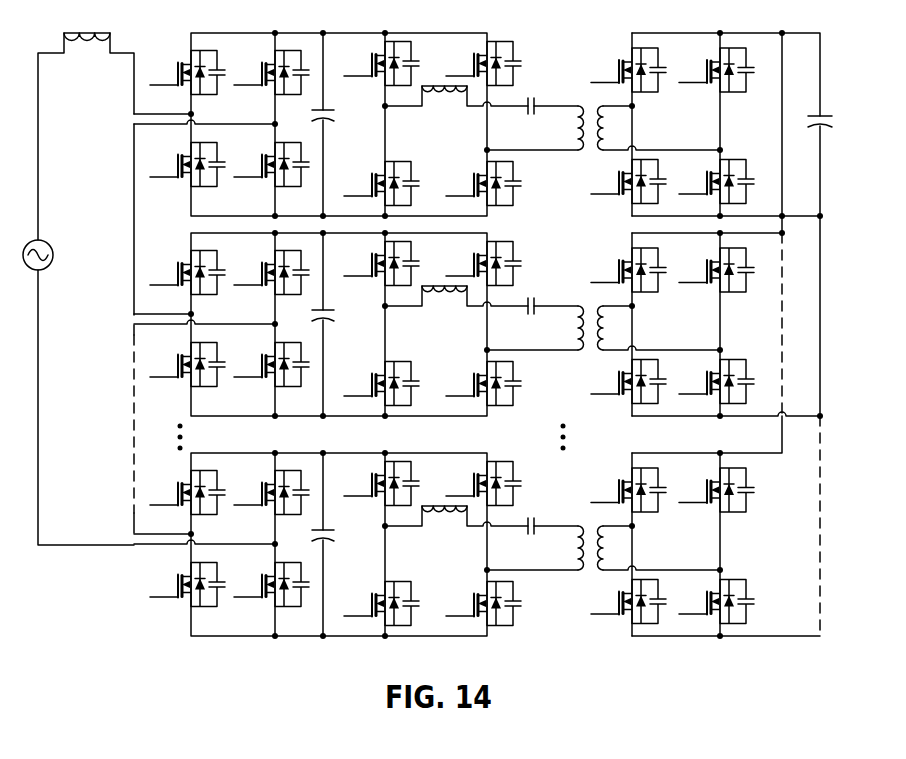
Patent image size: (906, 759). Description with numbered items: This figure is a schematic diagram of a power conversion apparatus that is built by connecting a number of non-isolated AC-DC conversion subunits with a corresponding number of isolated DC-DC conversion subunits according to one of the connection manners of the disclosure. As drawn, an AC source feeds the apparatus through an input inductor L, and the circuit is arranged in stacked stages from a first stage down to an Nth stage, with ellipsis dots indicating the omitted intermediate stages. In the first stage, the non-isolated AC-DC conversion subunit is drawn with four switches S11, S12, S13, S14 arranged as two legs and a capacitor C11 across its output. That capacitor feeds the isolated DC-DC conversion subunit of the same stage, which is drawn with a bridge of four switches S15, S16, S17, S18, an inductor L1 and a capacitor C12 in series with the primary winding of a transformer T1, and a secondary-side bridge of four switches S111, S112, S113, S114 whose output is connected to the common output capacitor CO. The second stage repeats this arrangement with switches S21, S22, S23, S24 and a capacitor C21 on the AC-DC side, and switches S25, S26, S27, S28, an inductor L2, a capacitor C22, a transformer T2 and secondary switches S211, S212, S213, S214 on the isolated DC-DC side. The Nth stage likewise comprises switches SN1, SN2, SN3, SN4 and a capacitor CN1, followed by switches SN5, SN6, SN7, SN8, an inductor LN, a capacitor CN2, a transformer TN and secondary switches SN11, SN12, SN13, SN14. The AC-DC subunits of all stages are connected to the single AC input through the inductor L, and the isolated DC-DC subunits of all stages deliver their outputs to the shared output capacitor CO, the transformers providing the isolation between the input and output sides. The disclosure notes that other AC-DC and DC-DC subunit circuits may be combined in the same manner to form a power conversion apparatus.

The input inductor L is at (87, 25).
The switch S11 is at (187, 73).
The switch S12 is at (187, 165).
The switch S13 is at (271, 73).
The switch S14 is at (271, 165).
The DC link capacitor C11 is at (340, 121).
The switch S15 is at (381, 64).
The switch S16 is at (381, 184).
The switch S17 is at (483, 64).
The switch S18 is at (483, 184).
The resonant inductor L1 is at (444, 109).
The resonant capacitor C12 is at (546, 96).
The transformer T1 is at (581, 128).
The switch S111 is at (626, 70).
The switch S112 is at (626, 182).
The switch S113 is at (714, 70).
The switch S114 is at (714, 182).
The output capacitor CO is at (836, 123).
The switch S21 is at (187, 273).
The switch S22 is at (187, 365).
The switch S23 is at (271, 273).
The switch S24 is at (271, 365).
The DC link capacitor C21 is at (340, 321).
The switch S25 is at (381, 264).
The switch S26 is at (381, 384).
The switch S27 is at (483, 264).
The switch S28 is at (483, 384).
The resonant inductor L2 is at (444, 309).
The resonant capacitor C22 is at (546, 296).
The transformer T2 is at (581, 328).
The switch S211 is at (626, 270).
The switch S212 is at (626, 382).
The switch S213 is at (714, 270).
The switch S214 is at (714, 382).
The switch SN1 is at (187, 493).
The switch SN2 is at (187, 585).
The switch SN3 is at (271, 493).
The switch SN4 is at (271, 585).
The DC link capacitor CN1 is at (340, 541).
The switch SN5 is at (381, 484).
The switch SN6 is at (381, 604).
The switch SN7 is at (483, 484).
The switch SN8 is at (483, 604).
The resonant inductor LN is at (444, 529).
The resonant capacitor CN2 is at (547, 516).
The transformer TN is at (581, 548).
The switch SN11 is at (625, 490).
The switch SN12 is at (625, 602).
The switch SN13 is at (713, 490).
The switch SN14 is at (713, 602).